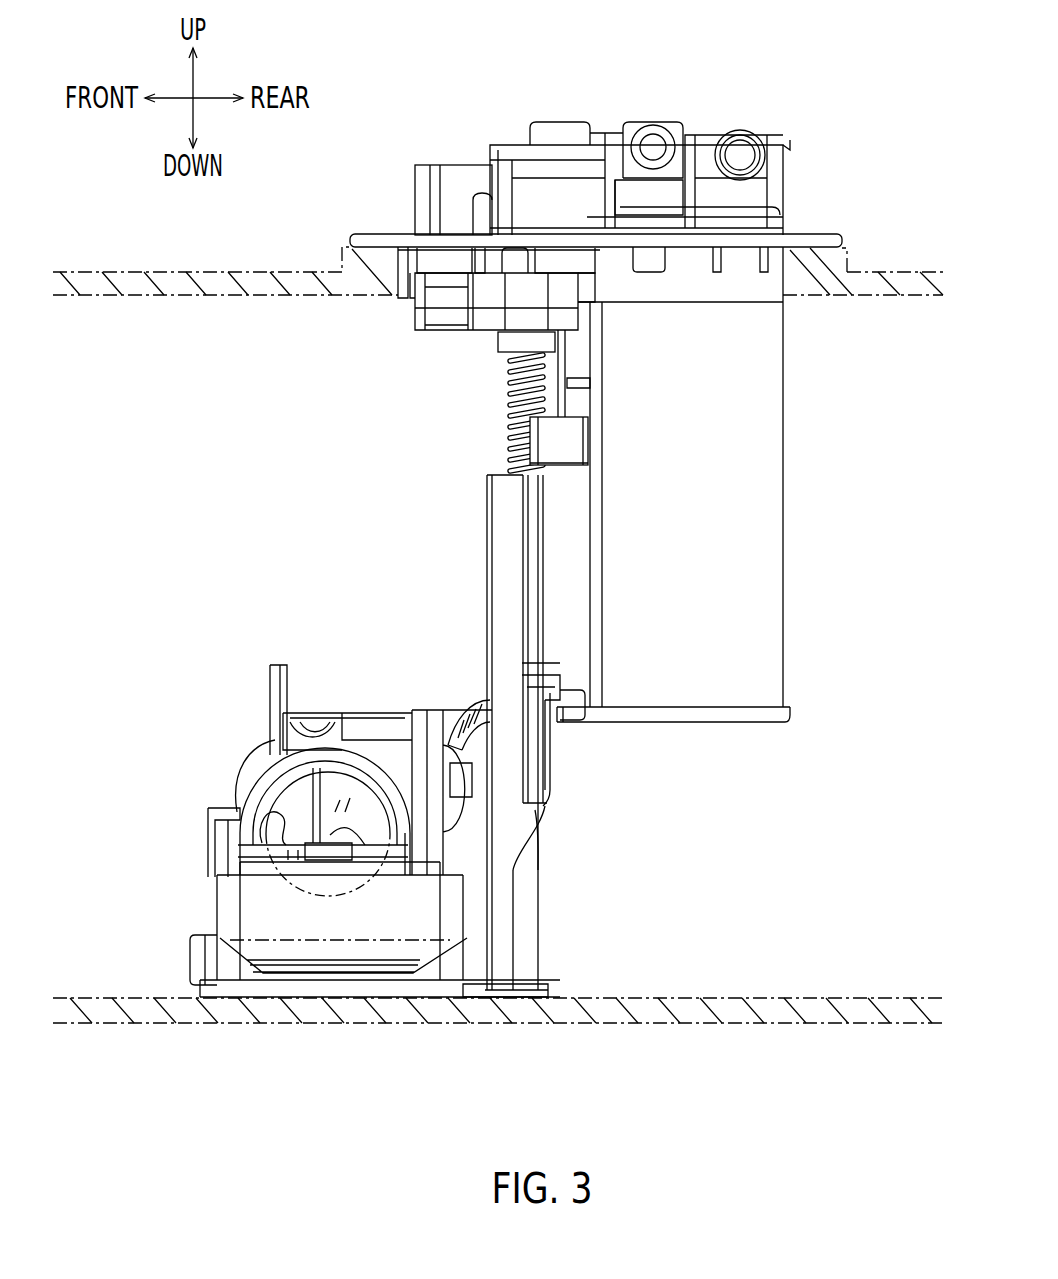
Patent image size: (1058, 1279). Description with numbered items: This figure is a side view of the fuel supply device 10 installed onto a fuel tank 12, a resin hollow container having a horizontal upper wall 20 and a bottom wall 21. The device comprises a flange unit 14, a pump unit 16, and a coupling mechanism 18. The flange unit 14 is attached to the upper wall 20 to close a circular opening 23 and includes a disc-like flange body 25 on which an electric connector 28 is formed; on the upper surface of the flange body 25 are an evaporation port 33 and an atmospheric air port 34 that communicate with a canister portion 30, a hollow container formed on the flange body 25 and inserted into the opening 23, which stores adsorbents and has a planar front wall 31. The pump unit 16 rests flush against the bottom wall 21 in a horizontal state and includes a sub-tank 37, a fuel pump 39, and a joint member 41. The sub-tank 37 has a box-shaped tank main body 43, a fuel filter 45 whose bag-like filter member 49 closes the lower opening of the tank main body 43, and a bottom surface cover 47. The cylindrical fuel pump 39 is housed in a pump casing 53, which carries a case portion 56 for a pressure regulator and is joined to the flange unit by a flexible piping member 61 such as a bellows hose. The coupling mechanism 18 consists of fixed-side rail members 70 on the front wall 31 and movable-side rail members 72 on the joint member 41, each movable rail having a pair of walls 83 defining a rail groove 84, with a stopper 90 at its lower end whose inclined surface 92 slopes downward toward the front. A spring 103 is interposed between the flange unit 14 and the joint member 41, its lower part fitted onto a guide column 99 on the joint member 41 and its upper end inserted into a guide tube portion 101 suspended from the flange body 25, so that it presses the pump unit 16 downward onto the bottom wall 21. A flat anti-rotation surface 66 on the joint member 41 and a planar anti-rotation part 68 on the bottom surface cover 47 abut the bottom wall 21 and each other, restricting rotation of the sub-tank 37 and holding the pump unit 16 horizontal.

The fuel supply device 10 is at (600, 192).
The fuel tank 12 is at (906, 260).
The flange unit 14 is at (592, 193).
The pump unit 16 is at (329, 842).
The coupling mechanism 18 is at (589, 772).
The upper wall 20 is at (231, 280).
The bottom wall 21 is at (147, 1010).
The opening 23 is at (418, 310).
The flange body 25 is at (375, 233).
The electric connector 28 is at (428, 188).
The canister portion 30 is at (798, 492).
The front wall 31 is at (578, 520).
The evaporation port 33 is at (655, 125).
The atmospheric air port 34 is at (738, 130).
The sub-tank 37 is at (294, 920).
The fuel pump 39 is at (268, 808).
The joint member 41 is at (489, 600).
The tank main body 43 is at (208, 913).
The fuel filter 45 is at (206, 852).
The bottom surface cover 47 is at (186, 957).
The filter member 49 is at (340, 1002).
The pump casing 53 is at (268, 780).
The case portion 56 is at (262, 712).
The piping member 61 is at (378, 722).
The anti-rotation surface 66 is at (527, 1000).
The anti-rotation part 68 is at (498, 1000).
The fixed-side rail members 70 is at (535, 490).
The movable-side rail members 72 is at (520, 565).
The walls 83 is at (516, 698).
The rail groove 84 is at (550, 785).
The stopper 90 is at (540, 818).
The inclined surface 92 is at (548, 802).
The guide column 99 is at (477, 413).
The guide tube portion 101 is at (505, 345).
The spring 103 is at (515, 395).